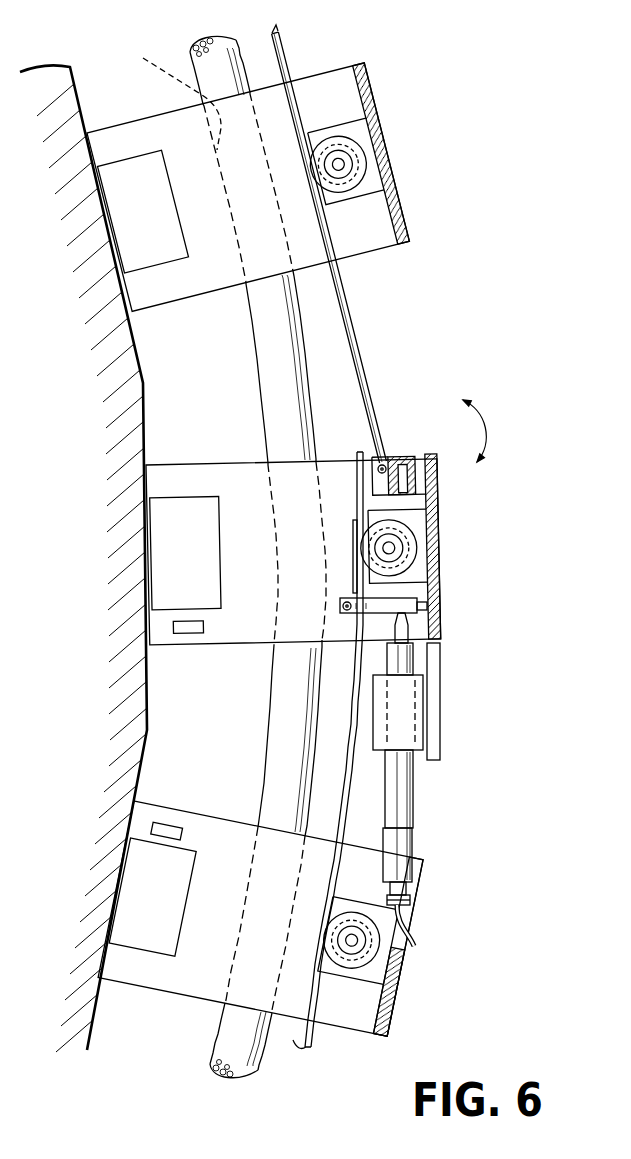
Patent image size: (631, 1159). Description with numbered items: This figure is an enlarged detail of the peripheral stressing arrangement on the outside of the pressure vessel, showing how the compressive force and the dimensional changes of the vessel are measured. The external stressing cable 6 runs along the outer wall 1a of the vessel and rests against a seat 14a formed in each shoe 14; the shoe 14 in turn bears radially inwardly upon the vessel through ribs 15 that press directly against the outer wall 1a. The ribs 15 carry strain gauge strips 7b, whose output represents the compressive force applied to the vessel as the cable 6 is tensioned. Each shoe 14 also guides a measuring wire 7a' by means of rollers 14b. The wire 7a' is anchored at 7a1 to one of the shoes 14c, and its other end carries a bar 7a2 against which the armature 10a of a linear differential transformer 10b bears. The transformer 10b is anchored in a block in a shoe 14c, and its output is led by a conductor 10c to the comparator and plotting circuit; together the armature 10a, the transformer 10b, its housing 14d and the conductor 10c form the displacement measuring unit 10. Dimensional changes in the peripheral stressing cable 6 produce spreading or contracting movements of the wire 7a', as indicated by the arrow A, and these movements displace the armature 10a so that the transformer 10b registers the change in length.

The outer wall of the vessel 1a is at (133, 335).
The external stressing cable 6 is at (272, 350).
The measuring wire 7a' is at (361, 244).
The anchorage of the measuring wire 7a1 is at (388, 462).
The bar 7a2 is at (428, 608).
The strain gauge strip 7b is at (183, 637).
The linear differential transformer unit 10 is at (455, 779).
The armature 10a is at (410, 643).
The linear differential transformer 10b is at (413, 798).
The conductor 10c is at (438, 924).
The shoe 14 is at (330, 92).
The seat 14a is at (174, 94).
The roller guide / anchoring block 14b is at (363, 147).
The shoe carrying the wire anchorage and transformer 14c is at (438, 549).
The cylinder housing 14d is at (418, 716).
The rib 15 is at (112, 147).
The arrow indicating wire movement A is at (482, 423).